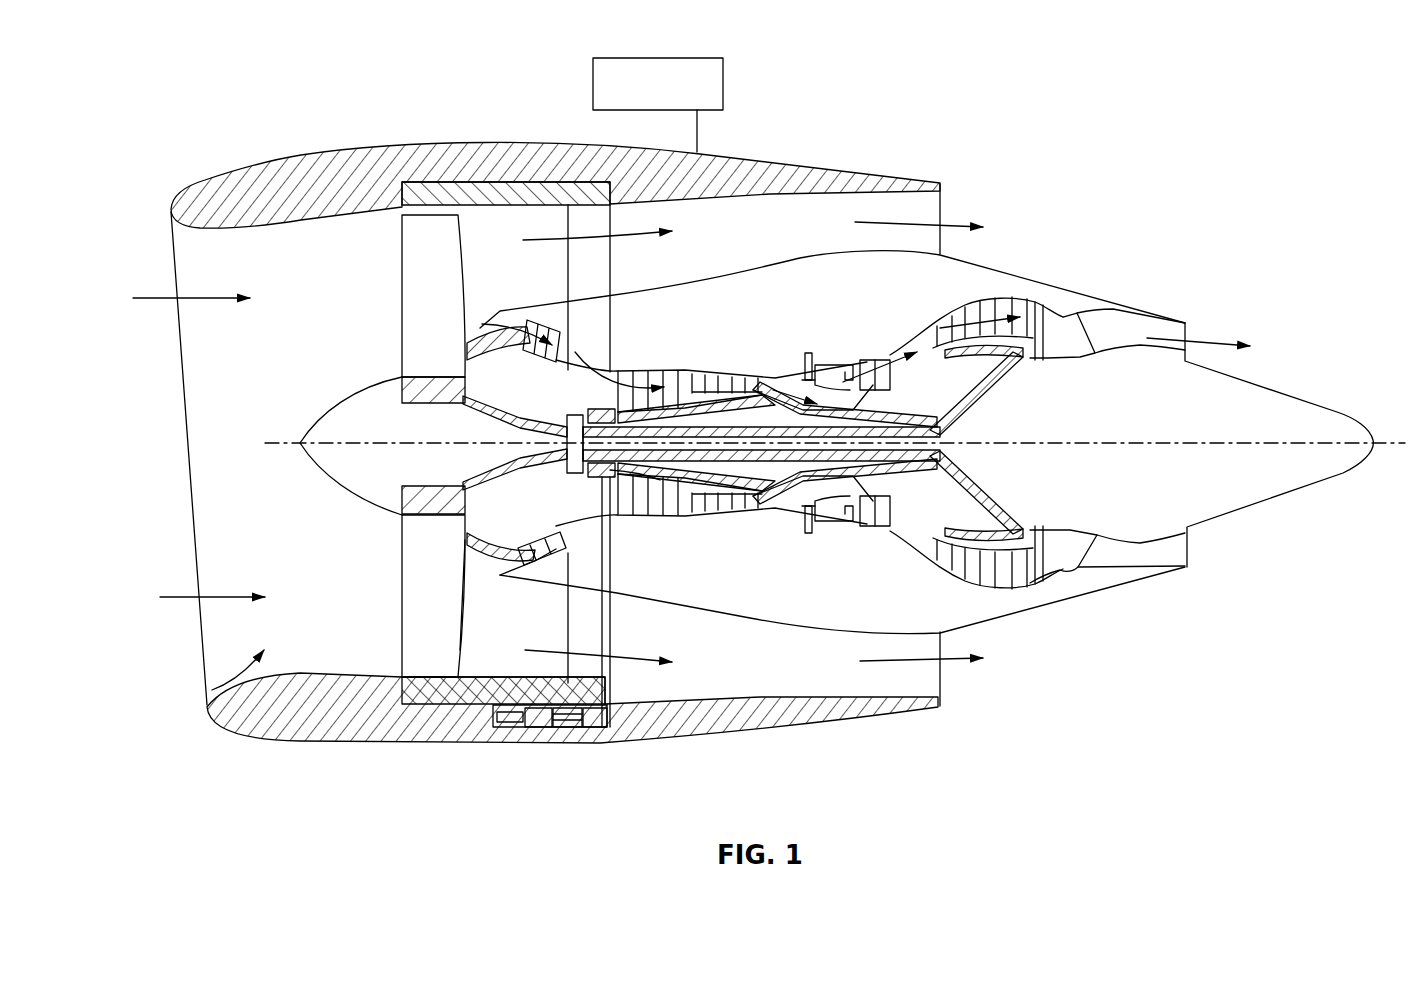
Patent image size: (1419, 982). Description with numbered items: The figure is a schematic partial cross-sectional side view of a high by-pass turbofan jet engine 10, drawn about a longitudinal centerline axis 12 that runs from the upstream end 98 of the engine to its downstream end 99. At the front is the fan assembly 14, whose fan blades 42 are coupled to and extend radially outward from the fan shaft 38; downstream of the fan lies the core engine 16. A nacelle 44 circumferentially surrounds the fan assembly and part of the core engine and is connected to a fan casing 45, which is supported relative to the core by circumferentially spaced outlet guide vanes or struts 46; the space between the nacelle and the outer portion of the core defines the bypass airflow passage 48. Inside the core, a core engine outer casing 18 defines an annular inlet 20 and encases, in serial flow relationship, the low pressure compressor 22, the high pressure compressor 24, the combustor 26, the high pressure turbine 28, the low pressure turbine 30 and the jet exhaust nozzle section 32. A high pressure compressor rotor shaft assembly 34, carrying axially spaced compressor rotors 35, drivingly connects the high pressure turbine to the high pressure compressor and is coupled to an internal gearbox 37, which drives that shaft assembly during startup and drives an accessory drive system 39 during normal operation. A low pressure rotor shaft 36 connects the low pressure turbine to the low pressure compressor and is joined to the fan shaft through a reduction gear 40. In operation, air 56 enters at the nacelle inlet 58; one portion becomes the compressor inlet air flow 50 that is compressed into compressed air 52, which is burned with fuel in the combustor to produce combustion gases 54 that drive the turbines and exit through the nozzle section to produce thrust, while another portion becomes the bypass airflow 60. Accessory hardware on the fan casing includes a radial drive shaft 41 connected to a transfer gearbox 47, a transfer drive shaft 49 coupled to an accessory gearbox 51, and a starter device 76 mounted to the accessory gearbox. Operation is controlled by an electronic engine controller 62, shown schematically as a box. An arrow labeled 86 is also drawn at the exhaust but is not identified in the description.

The high by-pass turbofan jet engine 10 is at (1108, 148).
The longitudinal centerline axis 12 is at (1144, 440).
The fan assembly 14 is at (491, 244).
The core engine 16 is at (808, 256).
The core engine outer casing 18 is at (783, 627).
The annular inlet 20 is at (507, 565).
The low pressure (LP) compressor 22 is at (565, 507).
The high pressure (HP) compressor 24 is at (640, 514).
The combustor 26 is at (830, 517).
The high pressure (HP) turbine 28 is at (985, 502).
The low pressure (LP) turbine 30 is at (1021, 592).
The jet exhaust nozzle section 32 is at (1098, 565).
The high pressure (HP) compressor rotor shaft assembly 34 is at (870, 411).
The compressor rotors 35 is at (690, 376).
The low pressure (LP) rotor shaft 36 is at (977, 403).
The internal gearbox (IGB) 37 is at (582, 480).
The fan shaft 38 is at (471, 403).
The accessory drive system 39 is at (558, 736).
The reduction gear 40 is at (573, 413).
The radial drive shaft 41 is at (608, 556).
The fan blades 42 is at (407, 294).
The nacelle 44 is at (405, 150).
The fan casing 45 is at (414, 742).
The outlet guide vanes or struts 46 is at (595, 213).
The transfer gearbox 47 is at (600, 735).
The bypass airflow passage 48 is at (734, 230).
The transfer drive shaft 49 is at (567, 728).
The compressor inlet air flow 50 is at (508, 321).
The accessory gearbox (AGB) 51 is at (537, 727).
The compressed air 52 is at (800, 372).
The combustion gases 54 is at (887, 364).
The air 56 is at (217, 292).
The nacelle inlet 58 is at (212, 690).
The bypass airflow 60 is at (623, 240).
The electronic engine controller 62 is at (723, 92).
The starter device 76 is at (500, 721).
The core exhaust flow 86 is at (1204, 343).
The upstream end 98 is at (154, 440).
The downstream end 99 is at (1382, 488).